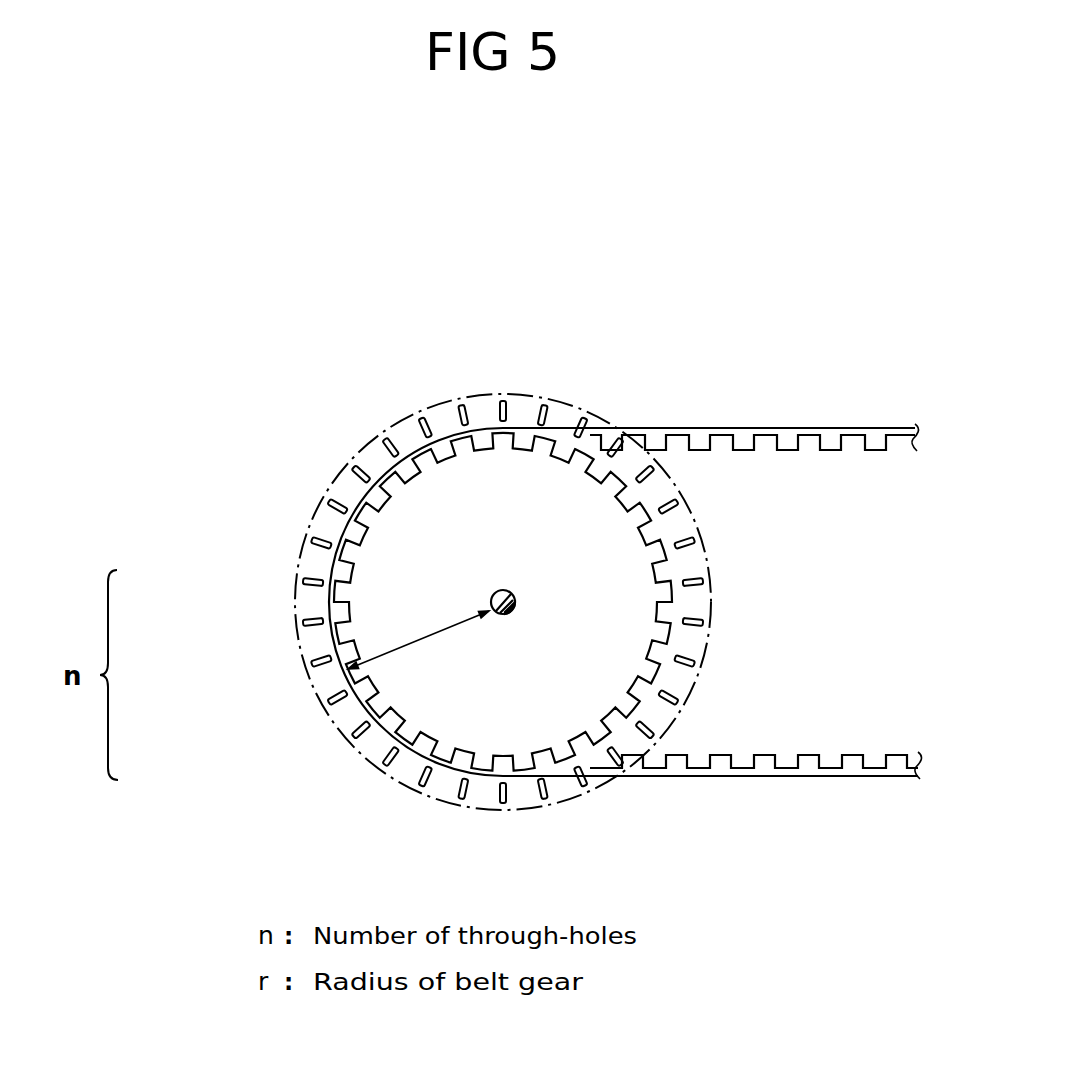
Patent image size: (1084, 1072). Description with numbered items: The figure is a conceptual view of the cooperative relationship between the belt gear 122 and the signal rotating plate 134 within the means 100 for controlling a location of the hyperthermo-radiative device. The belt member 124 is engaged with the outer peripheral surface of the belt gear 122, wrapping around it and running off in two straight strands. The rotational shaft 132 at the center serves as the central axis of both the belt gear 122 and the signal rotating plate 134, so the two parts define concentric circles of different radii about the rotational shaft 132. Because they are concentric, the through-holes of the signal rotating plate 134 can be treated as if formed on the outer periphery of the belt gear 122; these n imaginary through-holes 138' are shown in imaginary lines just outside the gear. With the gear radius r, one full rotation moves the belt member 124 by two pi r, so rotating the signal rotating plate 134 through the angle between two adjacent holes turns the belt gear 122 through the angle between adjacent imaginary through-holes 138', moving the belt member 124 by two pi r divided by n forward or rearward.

The means for controlling a location of the hyperthermo-radiative device 100 is at (291, 283).
The belt gear 122 is at (498, 492).
The belt member 124 is at (699, 438).
The rotational shaft 132 is at (498, 592).
The signal rotating plate 134 is at (372, 743).
The imaginary through-holes 138' is at (414, 602).